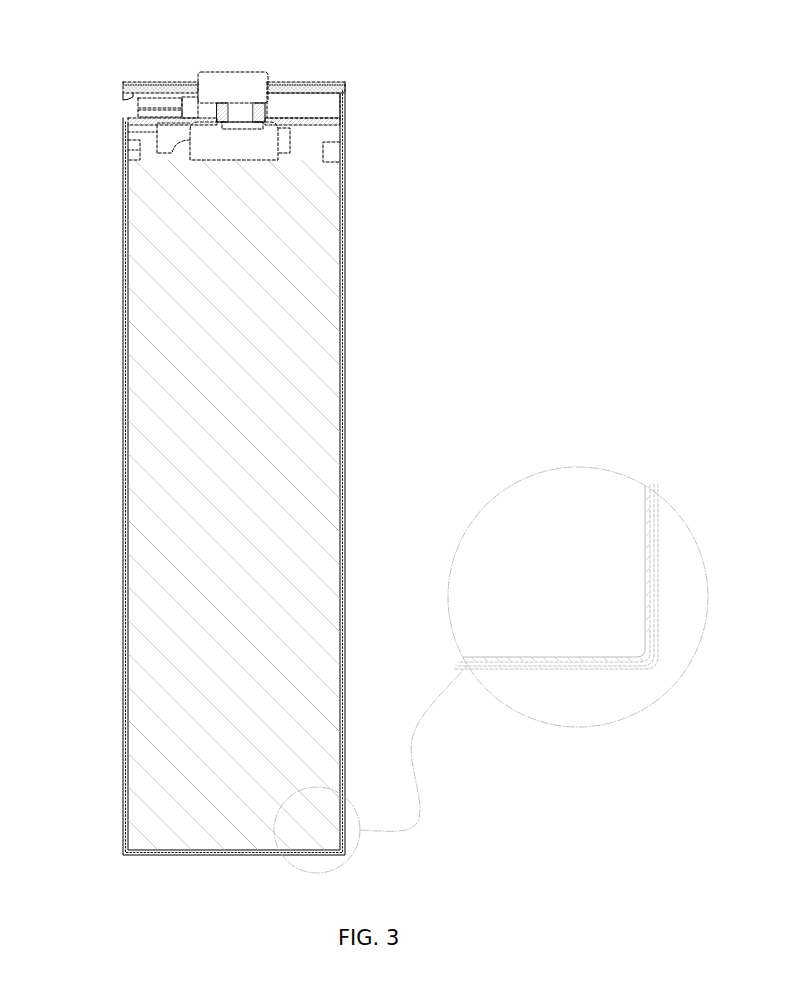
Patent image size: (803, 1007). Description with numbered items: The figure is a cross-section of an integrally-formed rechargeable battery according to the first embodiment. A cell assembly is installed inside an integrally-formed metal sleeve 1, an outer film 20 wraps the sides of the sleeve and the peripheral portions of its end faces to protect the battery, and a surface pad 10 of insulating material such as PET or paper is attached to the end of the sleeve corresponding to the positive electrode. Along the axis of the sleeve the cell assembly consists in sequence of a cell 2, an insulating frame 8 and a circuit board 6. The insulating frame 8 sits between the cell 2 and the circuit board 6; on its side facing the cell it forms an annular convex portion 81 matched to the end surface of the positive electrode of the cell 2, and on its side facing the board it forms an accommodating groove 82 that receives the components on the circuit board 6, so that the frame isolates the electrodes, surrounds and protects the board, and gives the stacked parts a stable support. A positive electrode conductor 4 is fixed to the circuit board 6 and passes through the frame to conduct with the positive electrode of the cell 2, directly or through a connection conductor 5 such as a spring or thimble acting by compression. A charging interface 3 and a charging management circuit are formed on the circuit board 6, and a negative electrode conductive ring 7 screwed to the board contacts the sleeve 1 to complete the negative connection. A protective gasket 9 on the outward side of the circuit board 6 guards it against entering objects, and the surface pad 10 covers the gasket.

The integrally-formed metal sleeve 1 is at (650, 555).
The cell 2 is at (173, 658).
The charging interface 3 is at (660, 628).
The positive electrode conductor 4 is at (232, 75).
The connection conductor 5 is at (237, 117).
The circuit board 6 is at (322, 97).
The negative electrode conductive ring 7 is at (320, 82).
The insulating frame 8 is at (335, 118).
The protective gasket 9 is at (292, 83).
The surface pad 10 is at (277, 83).
The outer film 20 is at (122, 485).
The annular convex portion 81 is at (343, 167).
The accommodating groove 82 is at (315, 113).